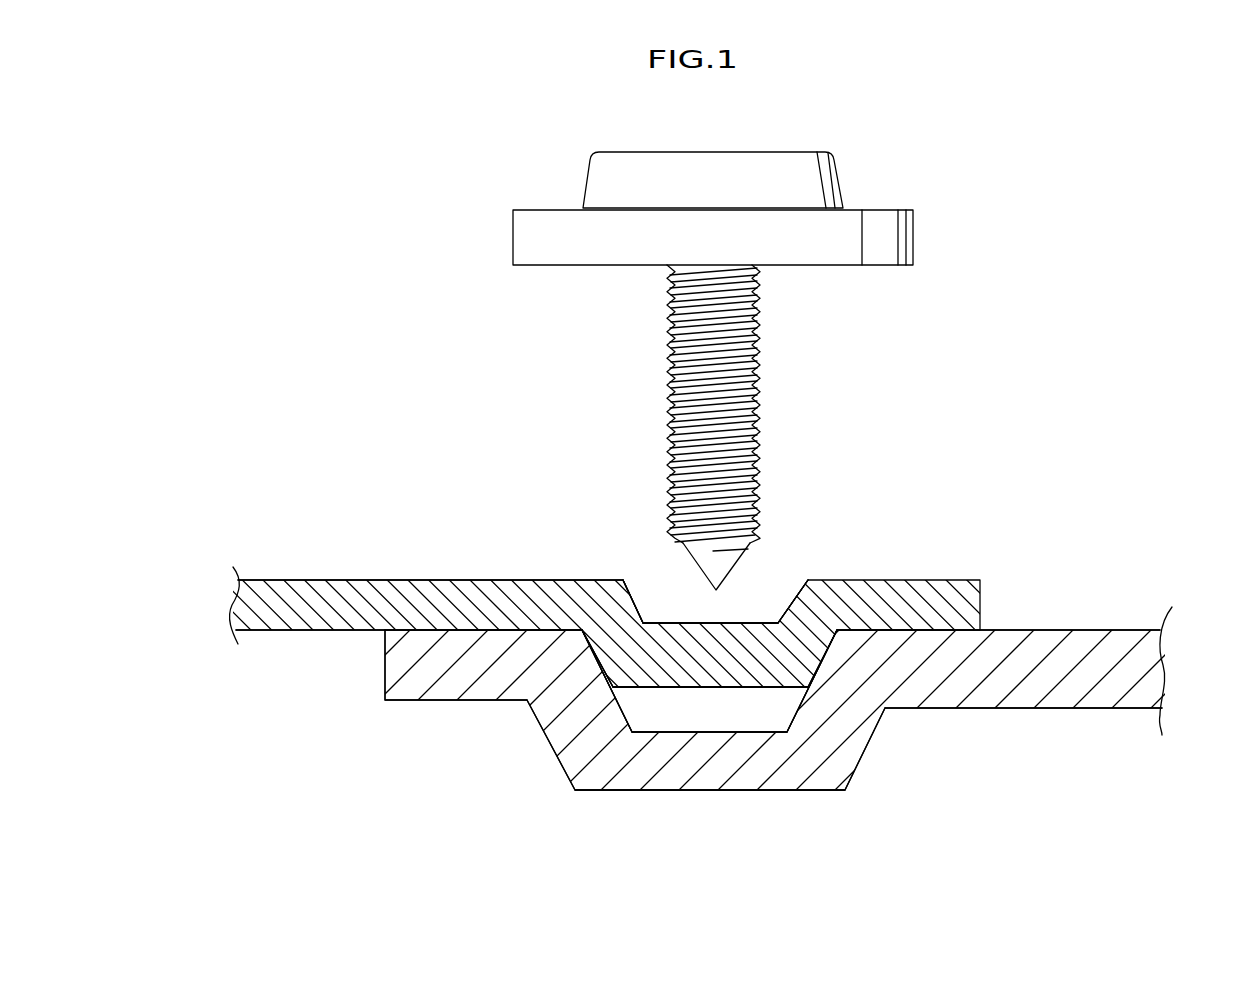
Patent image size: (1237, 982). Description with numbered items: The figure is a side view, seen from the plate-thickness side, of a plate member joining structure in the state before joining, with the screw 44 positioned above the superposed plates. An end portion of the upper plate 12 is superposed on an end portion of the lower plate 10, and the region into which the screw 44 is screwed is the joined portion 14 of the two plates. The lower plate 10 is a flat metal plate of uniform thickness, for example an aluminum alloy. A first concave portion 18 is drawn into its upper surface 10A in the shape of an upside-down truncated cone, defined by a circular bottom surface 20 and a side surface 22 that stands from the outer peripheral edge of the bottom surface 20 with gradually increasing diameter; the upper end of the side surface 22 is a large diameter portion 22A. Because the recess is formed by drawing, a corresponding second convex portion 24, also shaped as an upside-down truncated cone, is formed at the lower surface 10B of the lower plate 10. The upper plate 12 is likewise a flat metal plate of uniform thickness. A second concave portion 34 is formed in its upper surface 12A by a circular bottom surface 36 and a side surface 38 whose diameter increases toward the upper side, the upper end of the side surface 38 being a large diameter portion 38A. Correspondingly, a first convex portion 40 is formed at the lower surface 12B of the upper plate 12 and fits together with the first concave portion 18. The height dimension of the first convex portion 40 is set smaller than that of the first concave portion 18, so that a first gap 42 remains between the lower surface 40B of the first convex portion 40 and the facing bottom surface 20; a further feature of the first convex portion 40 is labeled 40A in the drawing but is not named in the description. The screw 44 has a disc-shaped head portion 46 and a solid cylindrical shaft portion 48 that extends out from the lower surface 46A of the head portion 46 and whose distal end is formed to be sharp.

The lower plate 10 is at (1127, 712).
The upper surface 10A is at (1087, 629).
The lower surface 10B is at (1055, 709).
The upper plate 12 is at (249, 578).
The upper surface 12A is at (303, 579).
The lower surface 12B is at (307, 631).
The joined portion 14 is at (833, 545).
The first concave portion 18 is at (752, 689).
The bottom surface 20 is at (676, 730).
The side surface 22 is at (598, 668).
The large diameter portion 22A is at (591, 645).
The second convex portion 24 is at (683, 792).
The second concave portion 34 is at (638, 485).
The bottom surface 36 is at (688, 622).
The side surface 38 is at (634, 593).
The large diameter portion 38A is at (798, 580).
The first convex portion 40 is at (592, 676).
The side wall of recess 40A is at (606, 683).
The lower surface 40B is at (806, 664).
The first gap 42 is at (703, 713).
The screw 44 is at (843, 182).
The head portion 46 is at (843, 199).
The lower surface 46A is at (872, 266).
The shaft portion 48 is at (758, 372).